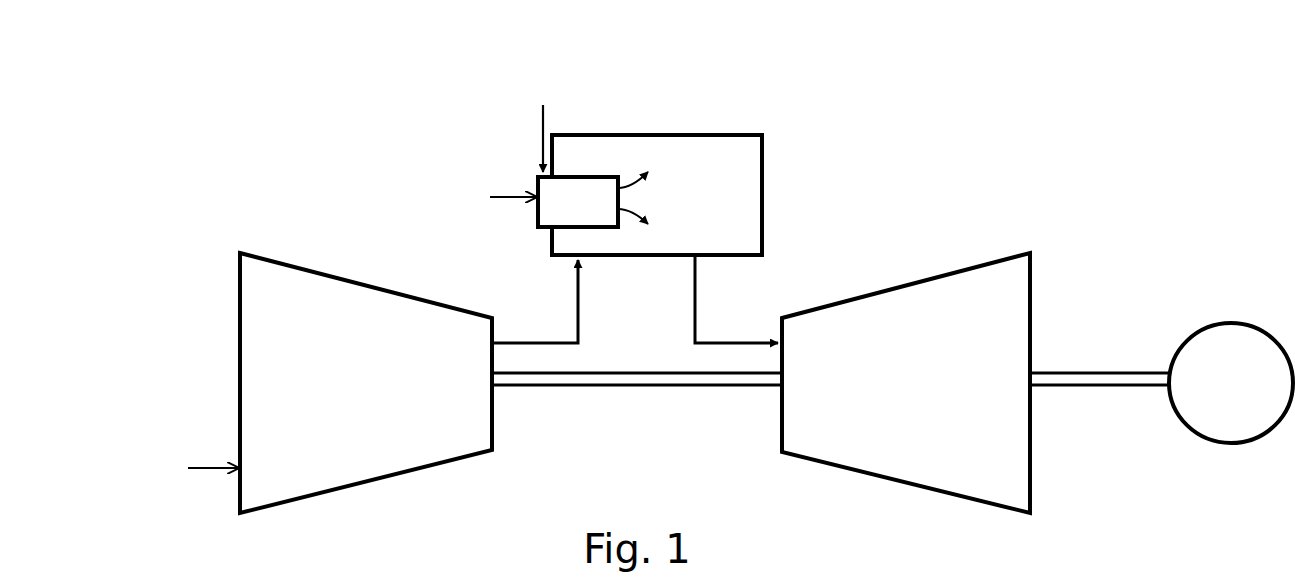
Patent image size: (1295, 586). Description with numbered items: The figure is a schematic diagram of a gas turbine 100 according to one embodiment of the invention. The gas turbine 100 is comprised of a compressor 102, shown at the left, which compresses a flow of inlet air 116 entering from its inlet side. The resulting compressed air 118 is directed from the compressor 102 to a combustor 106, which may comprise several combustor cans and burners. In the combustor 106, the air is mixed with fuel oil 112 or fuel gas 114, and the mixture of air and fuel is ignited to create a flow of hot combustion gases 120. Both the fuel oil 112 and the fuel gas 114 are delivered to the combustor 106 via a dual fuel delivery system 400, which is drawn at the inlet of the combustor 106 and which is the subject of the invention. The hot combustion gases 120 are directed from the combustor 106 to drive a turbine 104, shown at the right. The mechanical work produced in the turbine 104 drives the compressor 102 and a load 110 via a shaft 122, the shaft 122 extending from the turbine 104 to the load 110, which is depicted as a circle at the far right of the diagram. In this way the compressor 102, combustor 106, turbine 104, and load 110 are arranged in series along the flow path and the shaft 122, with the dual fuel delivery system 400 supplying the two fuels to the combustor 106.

The gas turbine 100 is at (846, 154).
The compressor 102 is at (328, 393).
The turbine 104 is at (874, 399).
The combustor 106 is at (675, 213).
The dual fuel delivery system 400 is at (552, 215).
The load 110 is at (1200, 393).
The fuel oil 112 is at (543, 110).
The fuel gas 114 is at (512, 197).
The inlet air 116 is at (208, 462).
The compressed air 118 is at (538, 338).
The hot combustion gases 120 is at (718, 337).
The shaft 122 is at (1092, 380).